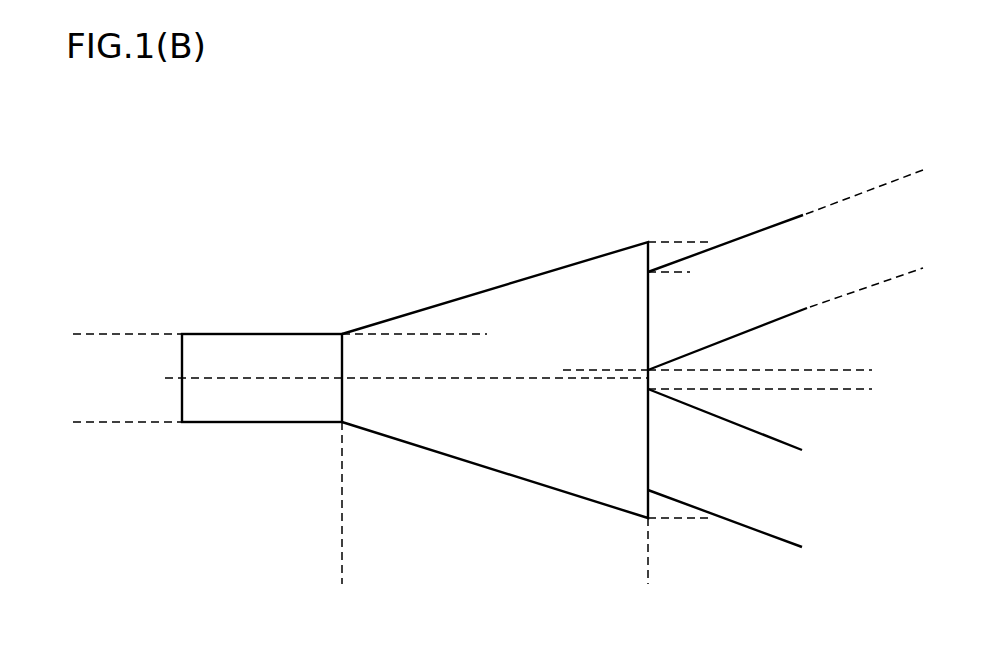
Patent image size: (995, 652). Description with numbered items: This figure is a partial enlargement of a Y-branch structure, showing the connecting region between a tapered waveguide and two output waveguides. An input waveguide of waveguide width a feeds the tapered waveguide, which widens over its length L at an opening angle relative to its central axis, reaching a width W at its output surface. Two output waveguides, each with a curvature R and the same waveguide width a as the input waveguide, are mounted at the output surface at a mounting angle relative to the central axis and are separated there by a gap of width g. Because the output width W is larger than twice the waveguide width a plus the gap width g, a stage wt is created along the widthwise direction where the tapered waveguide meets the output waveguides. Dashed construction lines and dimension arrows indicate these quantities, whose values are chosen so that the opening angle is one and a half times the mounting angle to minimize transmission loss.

The curvature of output waveguides R is at (785, 369).
The waveguide width a is at (92, 334).
The length of tapered waveguide L is at (648, 572).
The width of tapered waveguide at output surface W is at (705, 242).
The stage wt is at (677, 272).
The gap width g is at (866, 343).